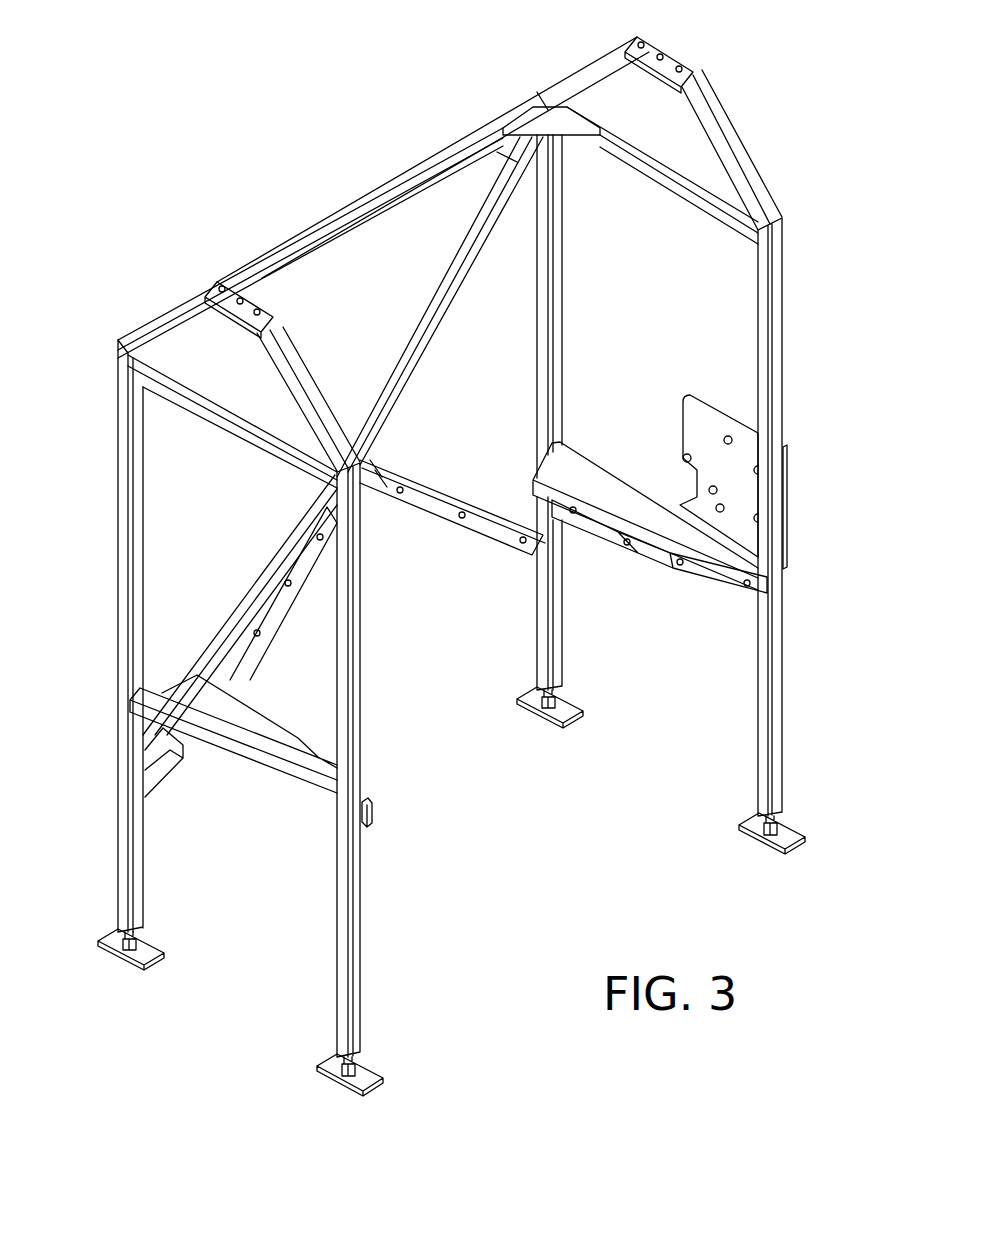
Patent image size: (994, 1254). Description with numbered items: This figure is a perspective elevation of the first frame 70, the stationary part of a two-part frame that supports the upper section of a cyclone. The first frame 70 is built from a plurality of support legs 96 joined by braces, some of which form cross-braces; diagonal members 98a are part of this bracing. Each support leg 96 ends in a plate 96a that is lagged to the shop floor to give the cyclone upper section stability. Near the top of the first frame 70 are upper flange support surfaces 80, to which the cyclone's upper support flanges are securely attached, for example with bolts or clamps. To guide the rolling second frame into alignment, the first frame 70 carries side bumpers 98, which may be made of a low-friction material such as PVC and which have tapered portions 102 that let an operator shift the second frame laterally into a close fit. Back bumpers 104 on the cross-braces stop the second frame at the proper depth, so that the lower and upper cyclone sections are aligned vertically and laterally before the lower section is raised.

The first frame 70 is at (97, 628).
The upper flange support surface 80 is at (655, 50).
The support leg 96 is at (137, 830).
The plate 96a is at (140, 960).
The side bumper 98 is at (440, 160).
The diagonal brace 98a is at (423, 303).
The tapered portion 102 is at (318, 757).
The back bumper 104 is at (302, 562).